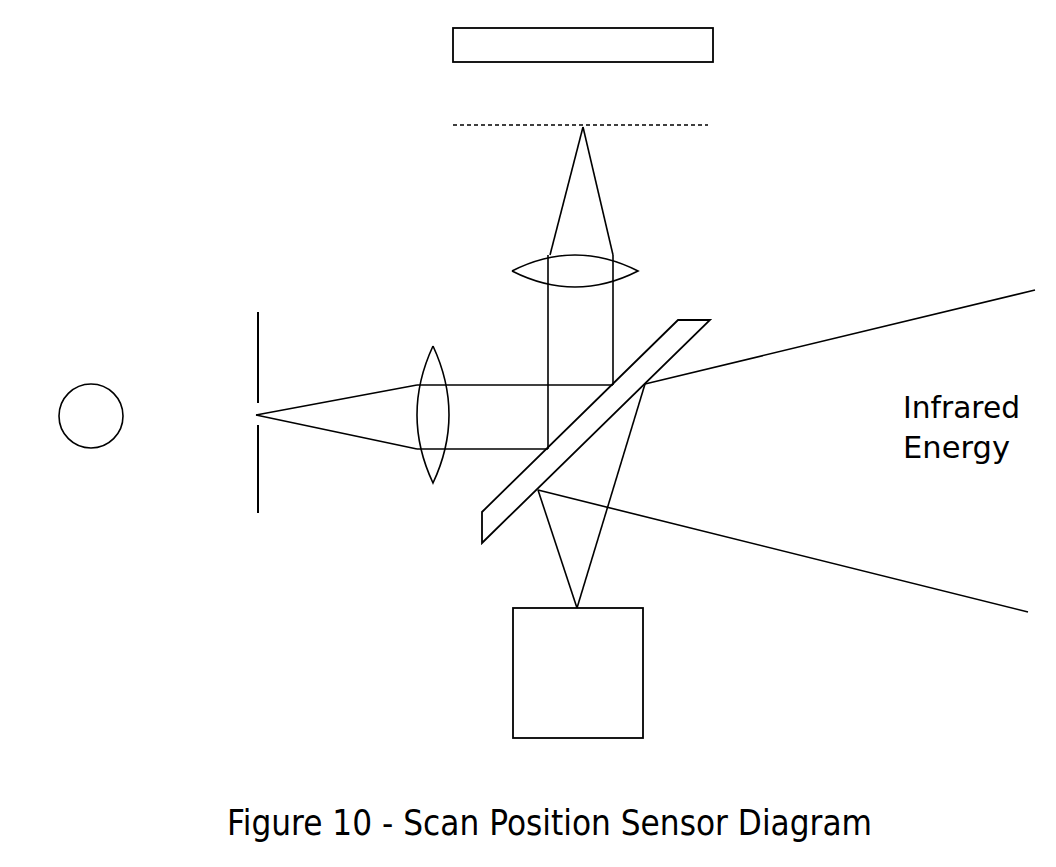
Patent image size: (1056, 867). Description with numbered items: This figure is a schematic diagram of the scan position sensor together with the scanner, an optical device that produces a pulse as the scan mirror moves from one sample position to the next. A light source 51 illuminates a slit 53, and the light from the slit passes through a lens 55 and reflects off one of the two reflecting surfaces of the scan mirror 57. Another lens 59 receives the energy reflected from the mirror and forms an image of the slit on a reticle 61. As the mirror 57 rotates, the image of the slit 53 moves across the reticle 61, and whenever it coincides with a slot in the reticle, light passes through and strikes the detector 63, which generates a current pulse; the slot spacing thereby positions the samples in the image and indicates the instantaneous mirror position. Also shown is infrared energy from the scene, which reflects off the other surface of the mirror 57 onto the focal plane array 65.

The light source 51 is at (102, 398).
The slit 53 is at (248, 519).
The lens 55 is at (427, 362).
The scan mirror 57 is at (470, 532).
The lens 59 is at (640, 272).
The reticle 61 is at (723, 128).
The detector 63 is at (723, 45).
The focal plane array 65 is at (644, 661).